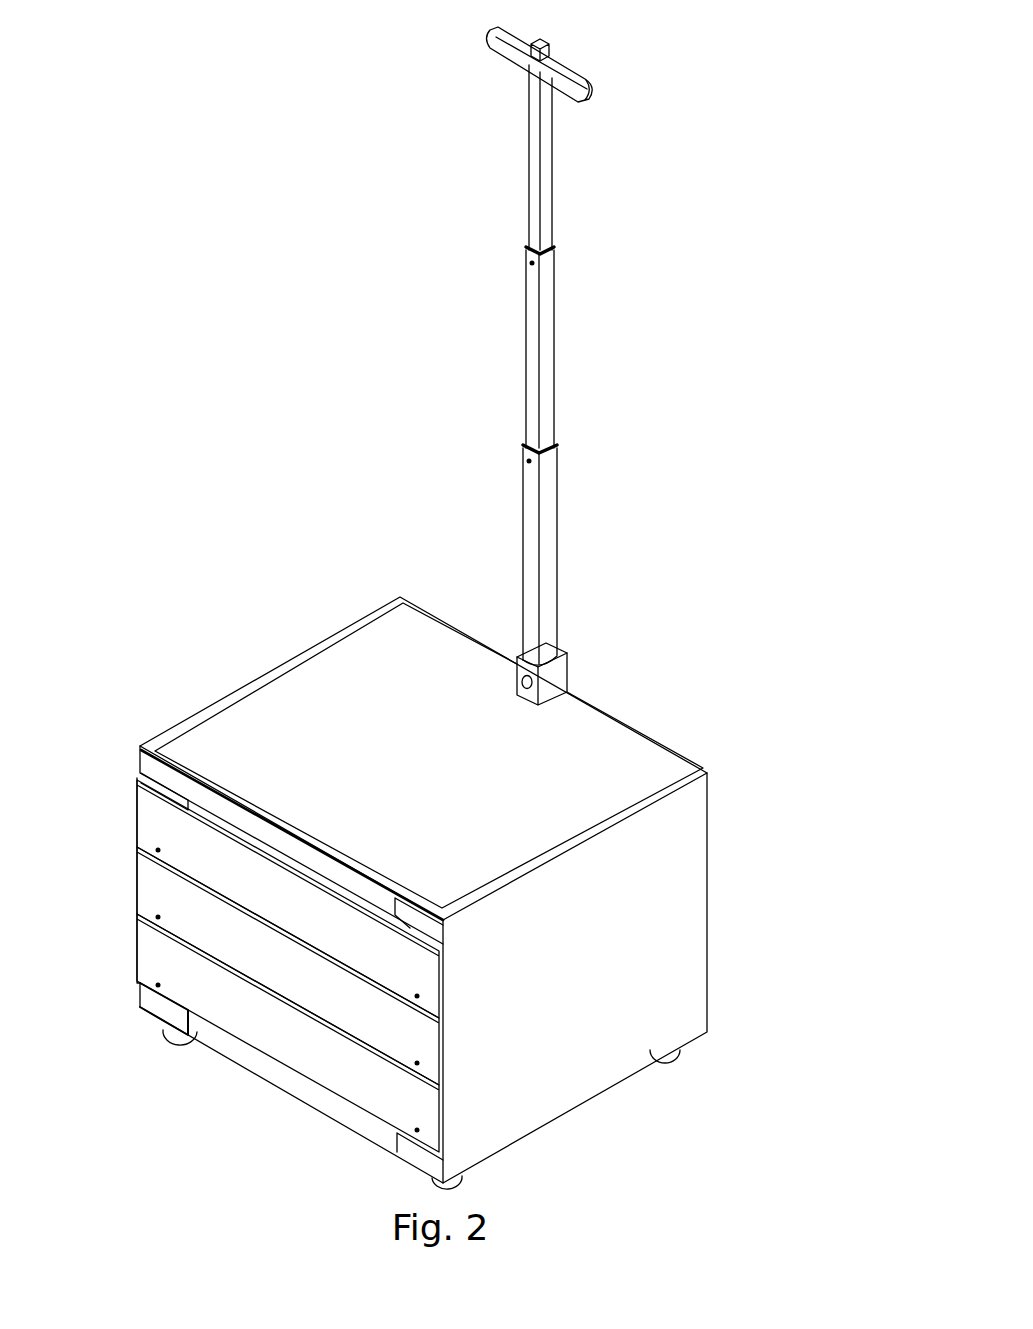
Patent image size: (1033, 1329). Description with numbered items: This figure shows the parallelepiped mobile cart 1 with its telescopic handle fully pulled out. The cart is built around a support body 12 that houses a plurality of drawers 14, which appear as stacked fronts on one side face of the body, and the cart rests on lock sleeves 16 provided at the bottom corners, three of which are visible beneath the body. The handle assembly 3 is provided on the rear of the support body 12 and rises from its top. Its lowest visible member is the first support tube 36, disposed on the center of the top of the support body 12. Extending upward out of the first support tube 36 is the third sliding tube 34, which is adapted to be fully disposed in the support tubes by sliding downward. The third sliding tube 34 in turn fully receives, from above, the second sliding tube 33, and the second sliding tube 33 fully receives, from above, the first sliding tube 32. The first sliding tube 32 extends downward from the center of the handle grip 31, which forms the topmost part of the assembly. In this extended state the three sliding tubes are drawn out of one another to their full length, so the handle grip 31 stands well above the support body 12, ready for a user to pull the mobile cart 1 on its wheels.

The mobile cart 1 is at (215, 620).
The handle assembly 3 is at (588, 287).
The support body 12 is at (680, 908).
The drawers 14 is at (155, 822).
The lock sleeves 16 is at (163, 1025).
The handle grip 31 is at (500, 36).
The first sliding tube 32 is at (538, 172).
The second sliding tube 33 is at (530, 362).
The third sliding tube 34 is at (528, 545).
The first support tube 36 is at (566, 684).